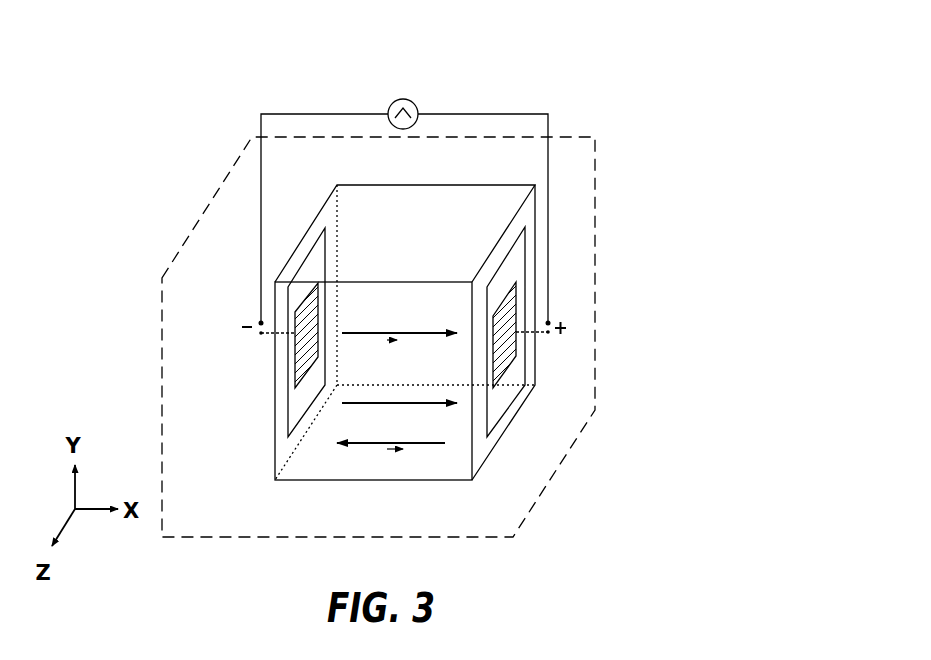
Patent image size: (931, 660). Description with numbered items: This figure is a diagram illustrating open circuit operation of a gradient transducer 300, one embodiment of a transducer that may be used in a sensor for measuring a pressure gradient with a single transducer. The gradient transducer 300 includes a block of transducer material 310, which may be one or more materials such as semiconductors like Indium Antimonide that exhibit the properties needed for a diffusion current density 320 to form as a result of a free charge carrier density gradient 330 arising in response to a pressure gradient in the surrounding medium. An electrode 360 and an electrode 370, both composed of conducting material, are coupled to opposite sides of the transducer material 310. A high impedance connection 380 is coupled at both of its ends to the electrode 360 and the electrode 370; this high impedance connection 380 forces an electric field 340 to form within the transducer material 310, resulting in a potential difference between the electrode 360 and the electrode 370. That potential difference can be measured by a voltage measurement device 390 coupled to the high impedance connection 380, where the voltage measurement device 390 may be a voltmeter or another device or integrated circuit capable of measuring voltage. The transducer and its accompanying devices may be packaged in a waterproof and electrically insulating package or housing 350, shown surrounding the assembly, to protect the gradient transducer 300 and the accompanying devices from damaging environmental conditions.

The gradient transducer 300 is at (404, 299).
The transducer material 310 is at (463, 196).
The diffusion current density 320 is at (388, 334).
The free charge carrier density gradient 330 is at (385, 403).
The electric field 340 is at (385, 443).
The housing 350 is at (559, 465).
The electrode 360 is at (505, 322).
The electrode 370 is at (295, 320).
The high impedance connection 380 is at (295, 114).
The voltage measurement device 390 is at (412, 100).